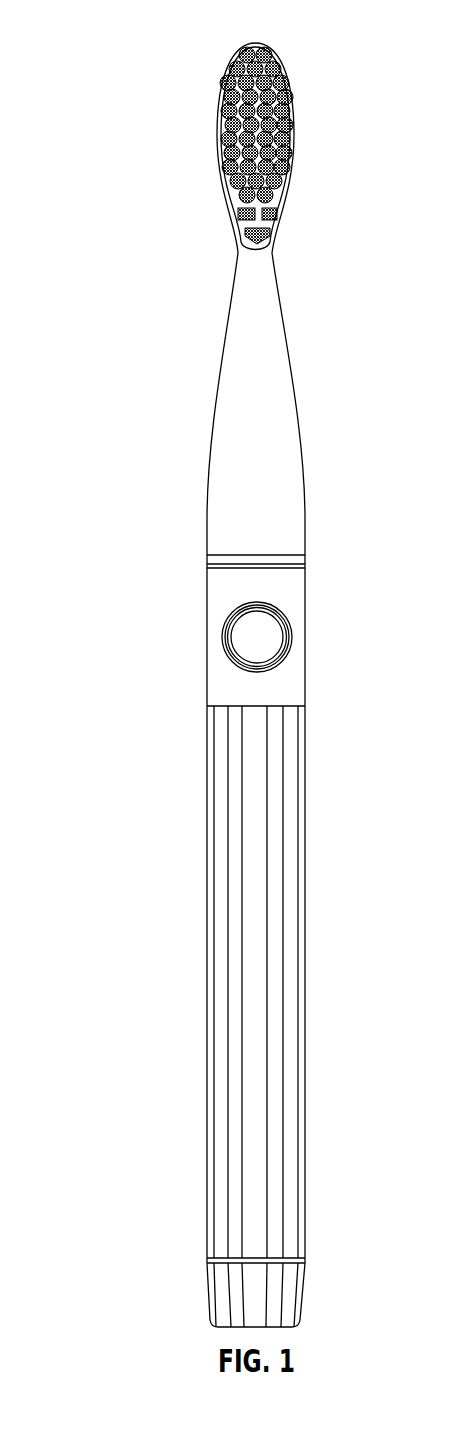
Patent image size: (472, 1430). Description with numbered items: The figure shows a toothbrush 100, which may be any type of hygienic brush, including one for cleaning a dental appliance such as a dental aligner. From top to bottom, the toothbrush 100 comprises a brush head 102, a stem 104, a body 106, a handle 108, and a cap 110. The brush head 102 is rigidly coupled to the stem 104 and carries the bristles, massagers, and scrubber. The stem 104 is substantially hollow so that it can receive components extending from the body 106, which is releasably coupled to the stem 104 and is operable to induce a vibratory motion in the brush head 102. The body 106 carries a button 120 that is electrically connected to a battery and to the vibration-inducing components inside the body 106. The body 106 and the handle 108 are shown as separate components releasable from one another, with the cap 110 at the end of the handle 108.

The toothbrush 100 is at (117, 29).
The brush head 102 is at (238, 252).
The stem 104 is at (207, 563).
The body 106 is at (207, 707).
The handle 108 is at (152, 710).
The cap 110 is at (210, 1327).
The button 120 is at (266, 631).